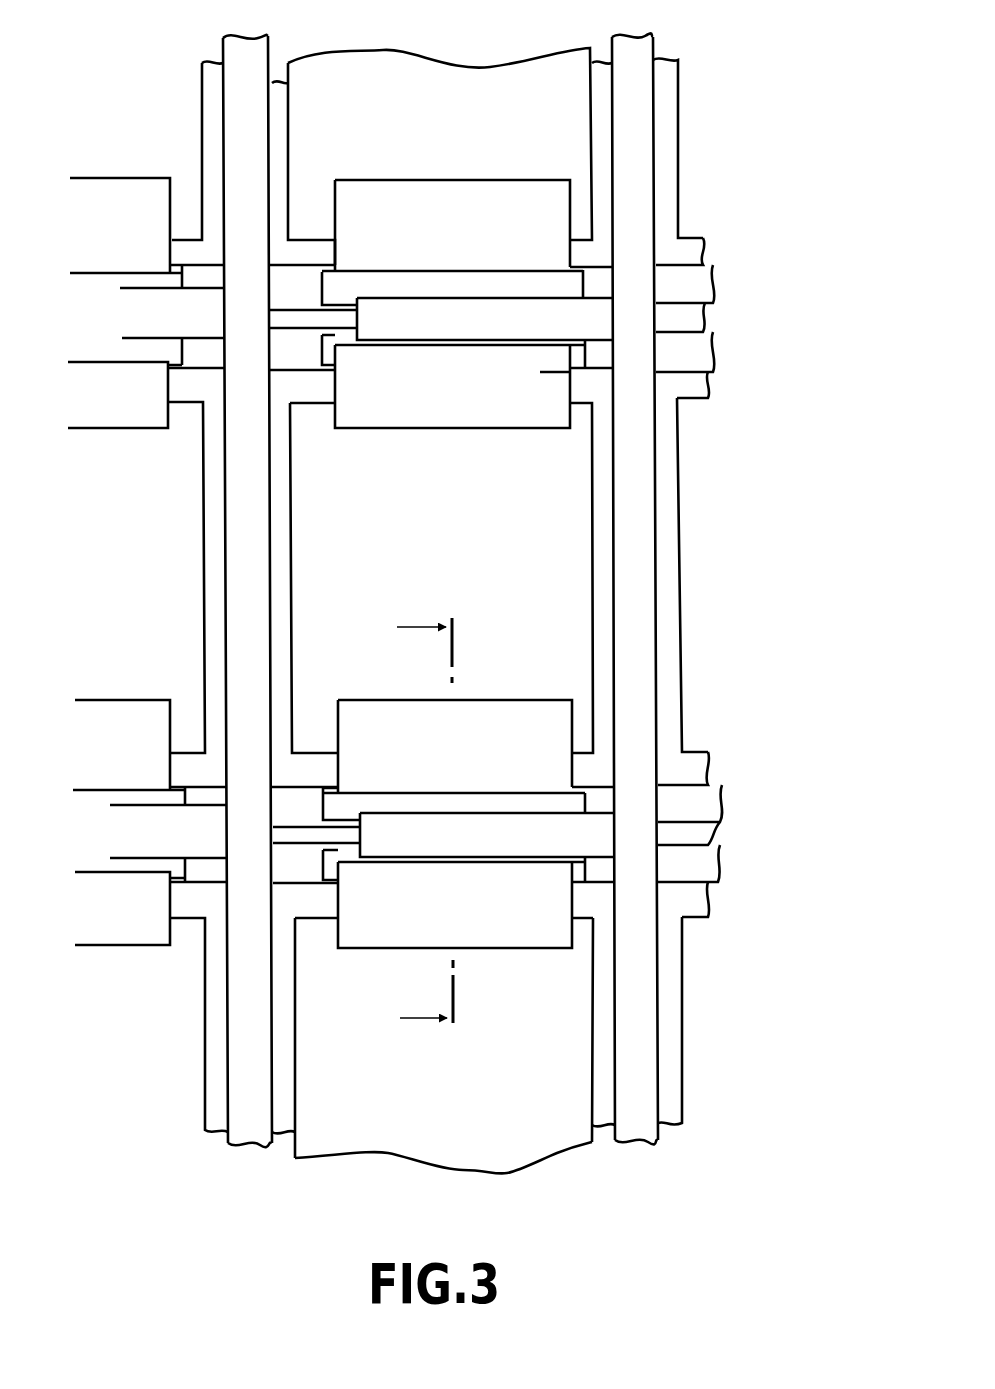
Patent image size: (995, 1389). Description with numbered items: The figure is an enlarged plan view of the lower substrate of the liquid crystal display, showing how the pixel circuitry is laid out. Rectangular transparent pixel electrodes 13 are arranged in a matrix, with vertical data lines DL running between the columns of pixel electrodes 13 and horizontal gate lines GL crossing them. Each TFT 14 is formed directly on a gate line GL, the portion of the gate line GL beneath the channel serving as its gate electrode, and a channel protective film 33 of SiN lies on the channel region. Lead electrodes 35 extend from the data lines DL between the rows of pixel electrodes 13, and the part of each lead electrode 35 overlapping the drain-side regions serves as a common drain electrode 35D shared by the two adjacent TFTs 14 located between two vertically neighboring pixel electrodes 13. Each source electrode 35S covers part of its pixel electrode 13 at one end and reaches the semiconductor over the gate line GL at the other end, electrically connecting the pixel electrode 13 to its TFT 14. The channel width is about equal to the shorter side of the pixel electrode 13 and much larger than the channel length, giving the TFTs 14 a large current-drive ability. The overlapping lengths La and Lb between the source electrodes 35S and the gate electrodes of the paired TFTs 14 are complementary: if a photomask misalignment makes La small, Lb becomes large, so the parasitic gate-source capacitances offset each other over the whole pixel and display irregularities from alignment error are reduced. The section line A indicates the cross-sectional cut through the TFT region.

The pixel electrode 13 is at (573, 665).
The TFT 14 is at (395, 232).
The channel protective film 33 is at (337, 293).
The lead electrode 35 is at (493, 322).
The drain electrode 35D is at (423, 313).
The source electrode 35S is at (488, 200).
The data line DL is at (248, 58).
The gate line GL is at (678, 290).
The overlapping length La is at (555, 346).
The overlapping length Lb is at (555, 285).
The section line A- A is at (422, 825).